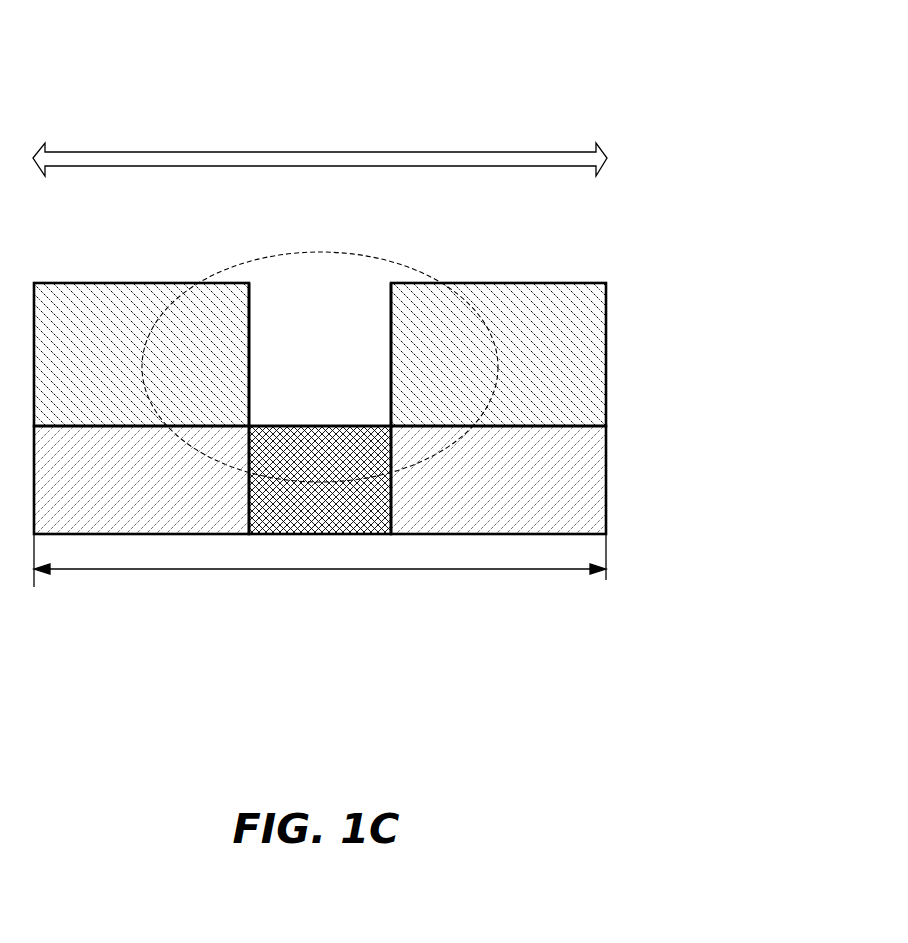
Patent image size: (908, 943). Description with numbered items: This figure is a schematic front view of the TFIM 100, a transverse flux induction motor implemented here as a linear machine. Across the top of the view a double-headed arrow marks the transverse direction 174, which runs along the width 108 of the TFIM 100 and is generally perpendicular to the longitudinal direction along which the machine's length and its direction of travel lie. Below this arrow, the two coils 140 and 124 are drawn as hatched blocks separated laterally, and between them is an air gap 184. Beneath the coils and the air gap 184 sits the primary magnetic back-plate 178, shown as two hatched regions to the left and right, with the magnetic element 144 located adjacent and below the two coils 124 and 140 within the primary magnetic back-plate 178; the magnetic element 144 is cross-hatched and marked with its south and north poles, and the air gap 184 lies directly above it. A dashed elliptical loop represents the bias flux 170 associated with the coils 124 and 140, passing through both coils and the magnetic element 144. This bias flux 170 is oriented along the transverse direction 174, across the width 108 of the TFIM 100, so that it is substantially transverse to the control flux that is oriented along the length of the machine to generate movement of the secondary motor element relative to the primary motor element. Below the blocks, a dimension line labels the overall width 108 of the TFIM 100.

The transverse flux induction motor (TFIM) 100 is at (695, 123).
The width 108 is at (320, 570).
The coil 124 is at (535, 367).
The coil 140 is at (88, 368).
The magnetic element 144 is at (303, 526).
The bias flux 170 is at (402, 263).
The transverse direction 174 is at (193, 152).
The primary magnetic back-plate 178 is at (567, 506).
The air gap 184 is at (303, 352).